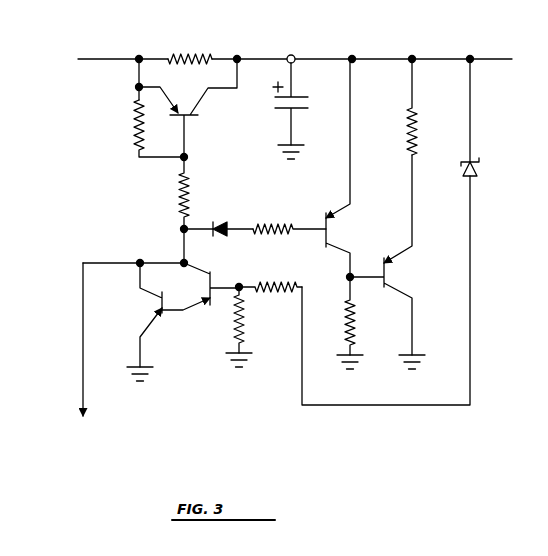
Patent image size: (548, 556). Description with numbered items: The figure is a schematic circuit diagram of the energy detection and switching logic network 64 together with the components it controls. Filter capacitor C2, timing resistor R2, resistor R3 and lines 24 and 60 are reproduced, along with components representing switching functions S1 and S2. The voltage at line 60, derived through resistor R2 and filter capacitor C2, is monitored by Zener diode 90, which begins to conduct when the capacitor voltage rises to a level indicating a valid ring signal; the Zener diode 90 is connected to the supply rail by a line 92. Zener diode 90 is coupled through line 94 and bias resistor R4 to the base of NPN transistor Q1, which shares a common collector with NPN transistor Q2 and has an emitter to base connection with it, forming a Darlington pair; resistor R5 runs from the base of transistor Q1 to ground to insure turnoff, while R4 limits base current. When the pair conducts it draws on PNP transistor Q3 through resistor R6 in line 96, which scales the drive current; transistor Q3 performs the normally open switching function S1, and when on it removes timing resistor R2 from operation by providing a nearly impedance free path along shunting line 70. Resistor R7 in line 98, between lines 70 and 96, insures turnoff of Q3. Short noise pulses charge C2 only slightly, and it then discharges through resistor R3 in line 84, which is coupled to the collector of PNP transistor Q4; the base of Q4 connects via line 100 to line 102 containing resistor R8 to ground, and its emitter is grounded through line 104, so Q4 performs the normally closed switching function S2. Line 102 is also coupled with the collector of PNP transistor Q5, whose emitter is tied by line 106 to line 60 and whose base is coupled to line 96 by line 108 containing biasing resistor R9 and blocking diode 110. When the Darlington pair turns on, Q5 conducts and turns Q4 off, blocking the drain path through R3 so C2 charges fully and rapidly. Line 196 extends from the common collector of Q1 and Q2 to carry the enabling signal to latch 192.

The line 24 is at (97, 58).
The line 60 is at (288, 56).
The shunting line 70 is at (136, 77).
The timing resistor R2 is at (182, 57).
The resistor R7 is at (135, 122).
The PNP transistor Q3 is at (190, 107).
The switching function S1 is at (199, 121).
The filter capacitor C2 is at (302, 110).
The line 98 is at (152, 160).
The resistor R6 is at (193, 186).
The line 96 is at (184, 236).
The blocking diode 110 is at (217, 221).
The biasing resistor R9 is at (268, 222).
The line 108 is at (312, 232).
The PNP transistor Q5 is at (349, 167).
The line 106 is at (352, 147).
The resistor R3 is at (417, 128).
The line 84 is at (414, 197).
The line 92 is at (472, 109).
The Zener diode 90 is at (478, 160).
The line 94 is at (472, 252).
The switching function S2 is at (444, 240).
The PNP transistor Q4 is at (384, 255).
The line 100 is at (373, 285).
The line 104 is at (414, 332).
The resistor R8 is at (345, 310).
The line 102 is at (346, 350).
The bias resistor R4 is at (274, 283).
The resistor R5 is at (245, 330).
The NPN transistor Q1 is at (200, 282).
The NPN transistor Q2 is at (152, 321).
The energy detection and switching logic network 64 is at (70, 291).
The line 196 is at (83, 358).
The latch 192 is at (71, 434).